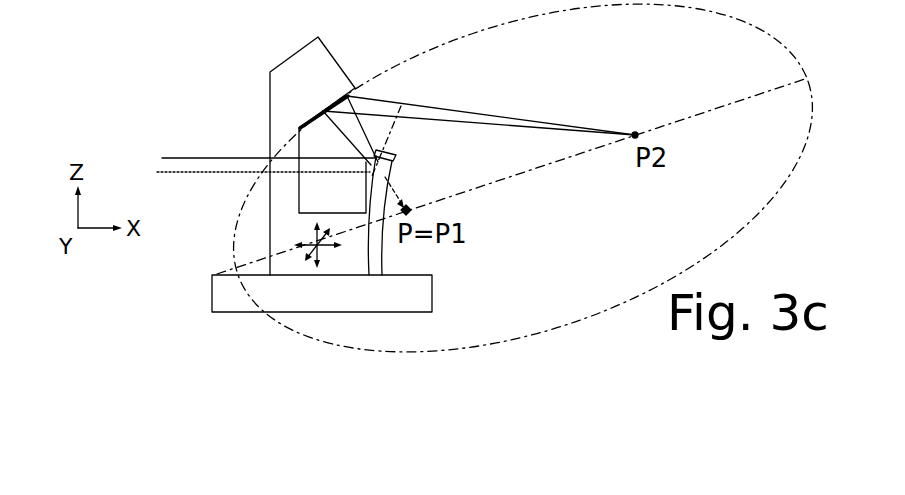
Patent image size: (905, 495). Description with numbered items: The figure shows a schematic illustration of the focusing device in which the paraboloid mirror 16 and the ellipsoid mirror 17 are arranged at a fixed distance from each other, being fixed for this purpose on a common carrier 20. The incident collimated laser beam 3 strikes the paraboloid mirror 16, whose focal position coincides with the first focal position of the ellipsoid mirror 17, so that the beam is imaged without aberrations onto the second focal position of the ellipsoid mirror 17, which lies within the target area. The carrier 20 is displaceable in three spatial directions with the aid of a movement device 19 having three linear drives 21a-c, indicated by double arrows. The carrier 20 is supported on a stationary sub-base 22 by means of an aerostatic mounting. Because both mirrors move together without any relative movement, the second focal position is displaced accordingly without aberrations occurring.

The laser beam 3 is at (198, 172).
The paraboloid mirror 16 is at (397, 157).
The ellipsoid mirror 17 is at (347, 98).
The movement device 19 is at (290, 228).
The carrier 20 is at (288, 104).
The linear drives 21a-c is at (328, 250).
The stationary sub-base 22 is at (222, 292).